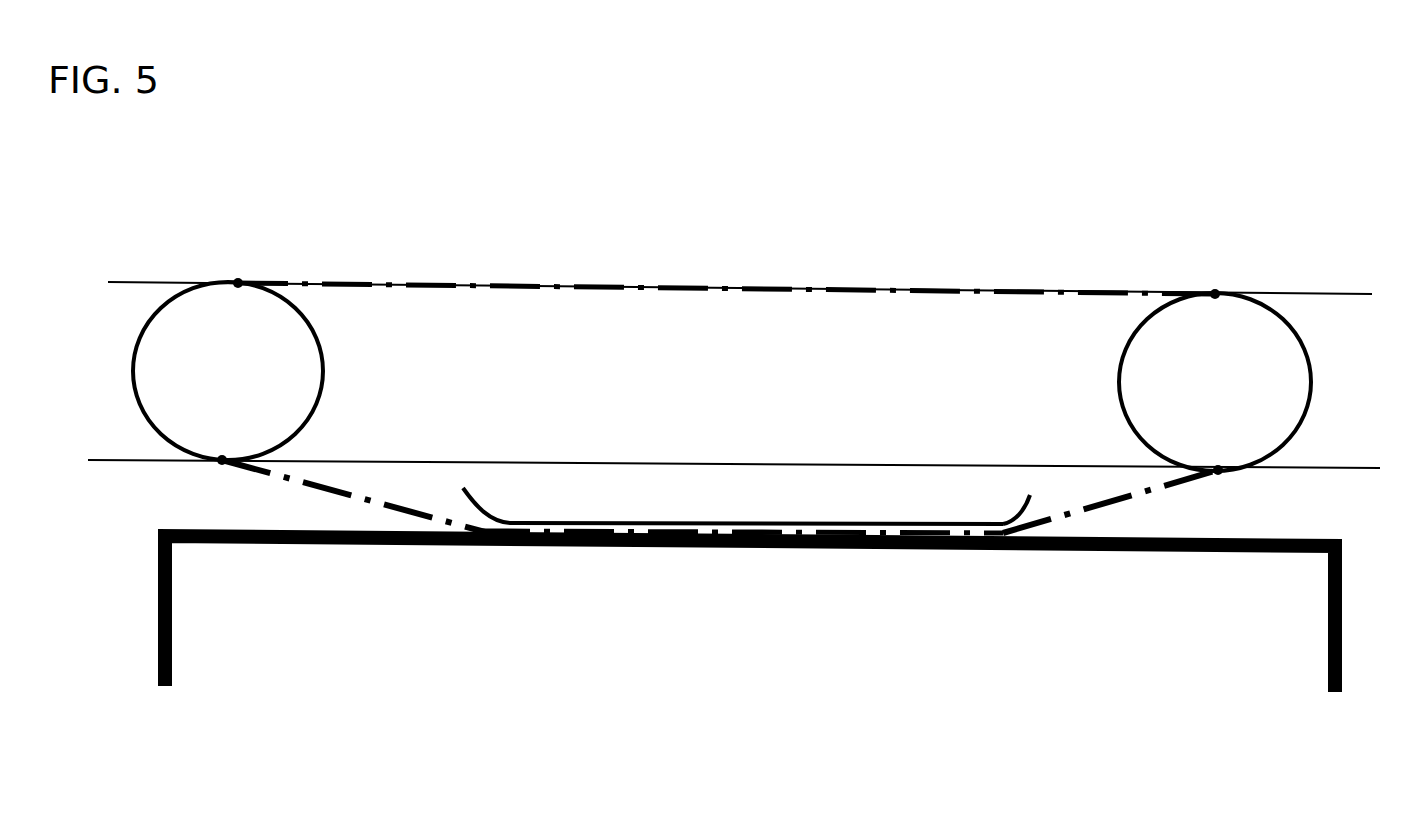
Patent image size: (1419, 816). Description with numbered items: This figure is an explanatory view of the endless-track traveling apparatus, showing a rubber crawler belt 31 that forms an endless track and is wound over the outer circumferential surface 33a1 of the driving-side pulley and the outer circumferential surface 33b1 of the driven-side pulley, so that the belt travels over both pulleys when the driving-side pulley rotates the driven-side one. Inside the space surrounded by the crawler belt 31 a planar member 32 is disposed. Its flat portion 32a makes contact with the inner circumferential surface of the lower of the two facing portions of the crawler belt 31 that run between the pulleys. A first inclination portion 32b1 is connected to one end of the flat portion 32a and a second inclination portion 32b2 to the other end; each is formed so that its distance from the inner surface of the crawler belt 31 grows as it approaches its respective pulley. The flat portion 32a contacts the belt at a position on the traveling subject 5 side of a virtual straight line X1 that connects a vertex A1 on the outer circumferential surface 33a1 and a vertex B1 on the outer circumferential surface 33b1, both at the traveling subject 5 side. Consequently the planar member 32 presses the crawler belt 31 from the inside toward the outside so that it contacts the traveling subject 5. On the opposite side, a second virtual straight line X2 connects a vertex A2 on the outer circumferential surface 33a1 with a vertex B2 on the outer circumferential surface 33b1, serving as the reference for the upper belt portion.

The traveling subject 5 is at (552, 640).
The crawler belt 31 is at (335, 488).
The planar member 32 is at (754, 439).
The flat portion 32a is at (710, 523).
The first inclination portion 32b1 is at (480, 507).
The second inclination portion 32b2 is at (1015, 515).
The outer circumferential surface of the driving-side pulley 33a1 is at (160, 305).
The outer circumferential surface of the driven-side pulley 33b1 is at (1158, 305).
The vertex A1 is at (222, 460).
The vertex A2 is at (238, 283).
The vertex B1 is at (1218, 470).
The vertex B2 is at (1215, 294).
The virtual straight line X1 is at (865, 463).
The virtual straight line X2 is at (503, 288).